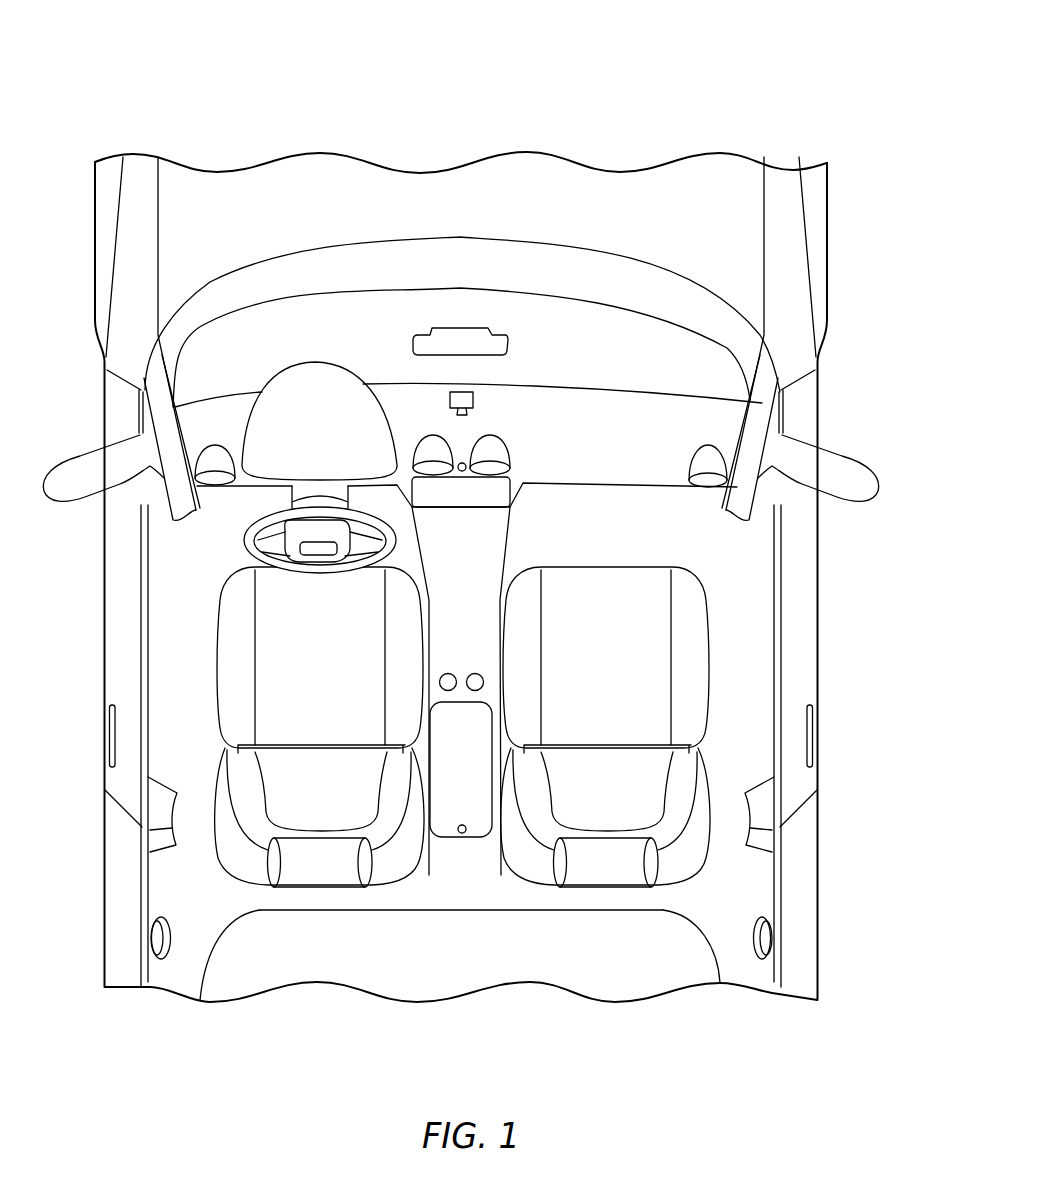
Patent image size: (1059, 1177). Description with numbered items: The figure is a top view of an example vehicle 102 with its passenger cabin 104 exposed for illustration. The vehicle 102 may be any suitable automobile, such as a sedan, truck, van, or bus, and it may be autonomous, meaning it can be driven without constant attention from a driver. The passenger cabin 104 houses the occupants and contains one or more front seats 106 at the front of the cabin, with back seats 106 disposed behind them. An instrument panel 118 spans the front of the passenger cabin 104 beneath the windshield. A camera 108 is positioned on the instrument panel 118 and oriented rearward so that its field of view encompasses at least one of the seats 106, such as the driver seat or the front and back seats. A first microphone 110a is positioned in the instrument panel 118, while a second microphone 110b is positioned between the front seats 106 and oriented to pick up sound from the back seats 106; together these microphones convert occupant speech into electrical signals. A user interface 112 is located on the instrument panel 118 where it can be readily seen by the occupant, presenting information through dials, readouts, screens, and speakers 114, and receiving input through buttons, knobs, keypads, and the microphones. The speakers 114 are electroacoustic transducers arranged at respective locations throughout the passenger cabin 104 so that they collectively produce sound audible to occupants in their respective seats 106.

The vehicle 102 is at (644, 73).
The passenger cabin 104 is at (735, 624).
The seats 106 is at (528, 858).
The camera 108 is at (476, 400).
The first microphone 110a is at (465, 463).
The second microphone 110b is at (462, 824).
The user interface 112 is at (493, 495).
The speakers 114 is at (215, 484).
The instrument panel 118 is at (658, 425).